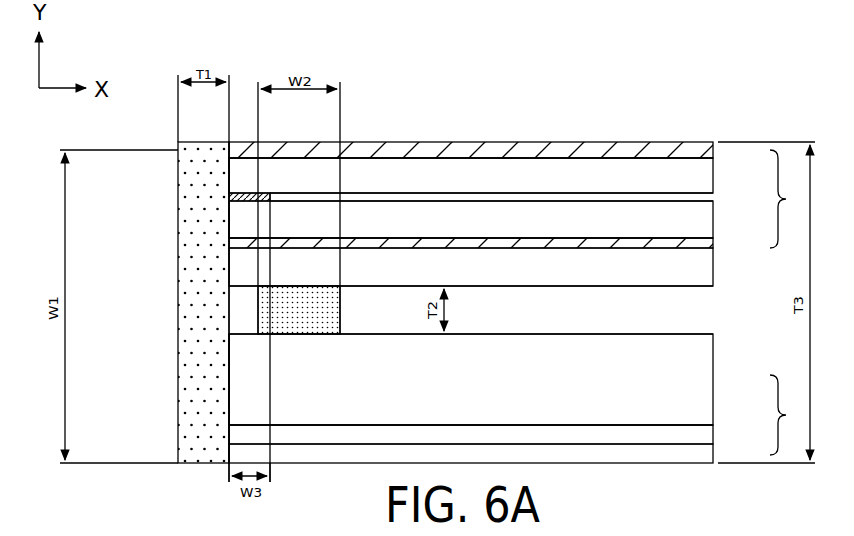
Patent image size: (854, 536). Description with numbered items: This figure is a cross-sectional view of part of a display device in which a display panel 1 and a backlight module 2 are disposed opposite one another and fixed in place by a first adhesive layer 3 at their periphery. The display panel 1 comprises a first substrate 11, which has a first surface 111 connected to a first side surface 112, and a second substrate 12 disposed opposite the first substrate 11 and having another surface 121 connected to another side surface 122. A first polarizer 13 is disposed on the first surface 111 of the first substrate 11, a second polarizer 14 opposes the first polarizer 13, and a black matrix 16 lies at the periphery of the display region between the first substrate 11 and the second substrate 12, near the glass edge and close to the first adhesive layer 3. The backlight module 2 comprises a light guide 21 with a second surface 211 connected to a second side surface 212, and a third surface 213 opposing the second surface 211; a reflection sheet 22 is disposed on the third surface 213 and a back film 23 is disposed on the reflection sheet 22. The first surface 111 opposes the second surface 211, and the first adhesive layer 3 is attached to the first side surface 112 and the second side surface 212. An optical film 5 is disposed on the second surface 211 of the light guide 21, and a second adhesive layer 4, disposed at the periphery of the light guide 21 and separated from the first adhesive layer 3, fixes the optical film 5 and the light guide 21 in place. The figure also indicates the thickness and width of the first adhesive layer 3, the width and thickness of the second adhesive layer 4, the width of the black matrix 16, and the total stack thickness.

The display panel 1 is at (453, 170).
The first substrate 11 is at (704, 214).
The first surface 111 is at (229, 246).
The first side surface 112 is at (229, 226).
The second substrate 12 is at (704, 183).
The another surface 121 is at (487, 157).
The another side surface 122 is at (230, 177).
The first polarizer 13 is at (704, 245).
The second polarizer 14 is at (704, 152).
The black matrix 16 is at (229, 199).
The backlight module 2 is at (453, 385).
The light guide 21 is at (704, 380).
The second surface 211 is at (240, 334).
The second side surface 212 is at (229, 378).
The third surface 213 is at (245, 425).
The reflection sheet 22 is at (704, 428).
The back film 23 is at (704, 448).
The first adhesive layer 3 is at (178, 295).
The second adhesive layer 4 is at (343, 310).
The optical film 5 is at (704, 272).